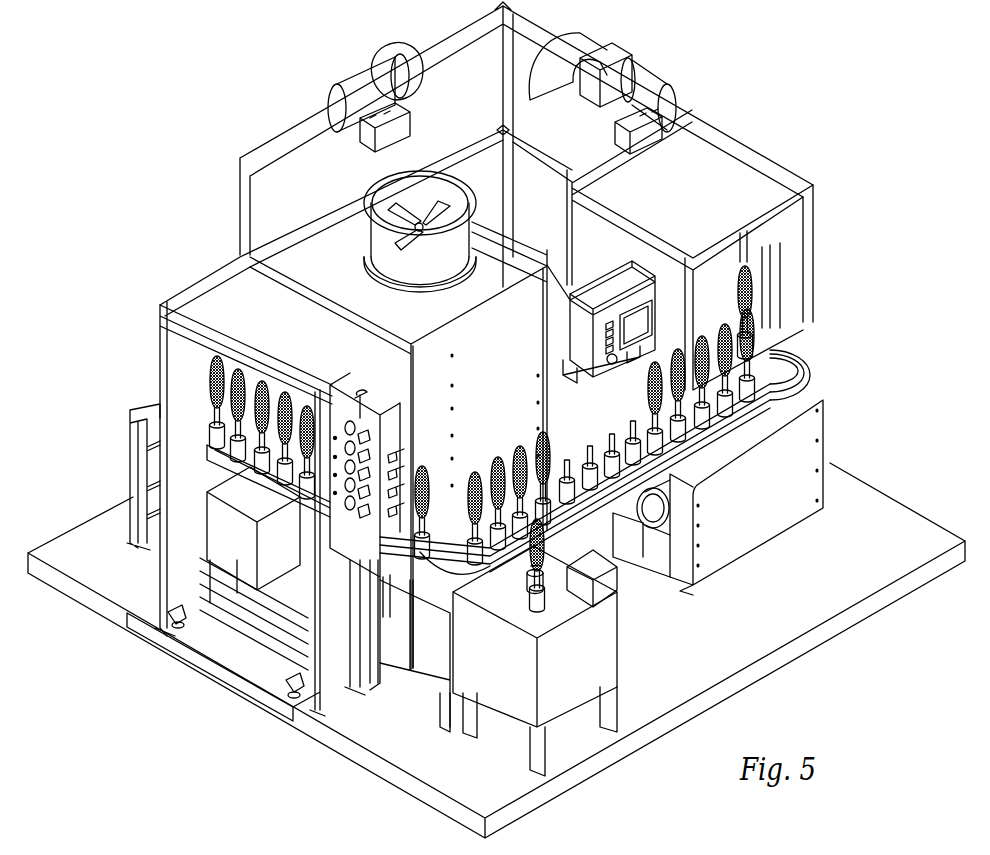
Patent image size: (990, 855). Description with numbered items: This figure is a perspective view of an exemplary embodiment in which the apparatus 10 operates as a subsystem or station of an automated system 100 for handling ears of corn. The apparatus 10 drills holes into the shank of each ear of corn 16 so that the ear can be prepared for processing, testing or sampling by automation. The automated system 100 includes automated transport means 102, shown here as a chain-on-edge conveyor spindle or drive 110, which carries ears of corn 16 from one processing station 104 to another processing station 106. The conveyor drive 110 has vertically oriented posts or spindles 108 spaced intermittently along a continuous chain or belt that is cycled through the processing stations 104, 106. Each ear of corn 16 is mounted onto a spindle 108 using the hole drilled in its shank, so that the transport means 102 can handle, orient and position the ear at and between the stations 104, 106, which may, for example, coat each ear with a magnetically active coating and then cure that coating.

The automated system 100 is at (752, 75).
The processing station 104 is at (218, 268).
The processing station 106 is at (830, 262).
The ear of corn 16 is at (758, 336).
The chain-on-edge conveyor spindle or drive 110 is at (802, 373).
The vertically oriented posts or spindles 108 is at (477, 568).
The automated transport means 102 is at (378, 558).
The apparatus 10 is at (630, 644).